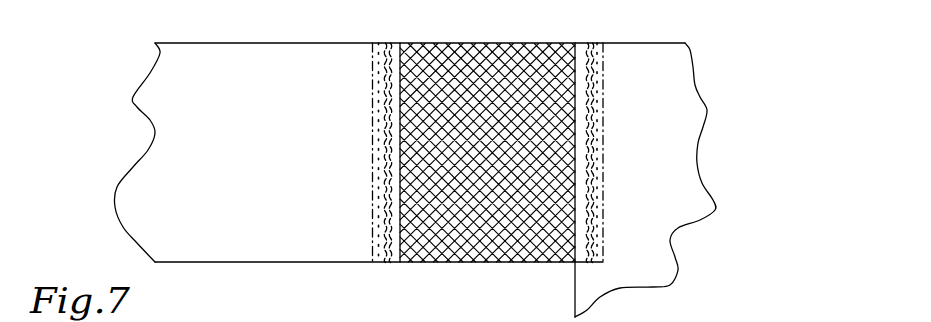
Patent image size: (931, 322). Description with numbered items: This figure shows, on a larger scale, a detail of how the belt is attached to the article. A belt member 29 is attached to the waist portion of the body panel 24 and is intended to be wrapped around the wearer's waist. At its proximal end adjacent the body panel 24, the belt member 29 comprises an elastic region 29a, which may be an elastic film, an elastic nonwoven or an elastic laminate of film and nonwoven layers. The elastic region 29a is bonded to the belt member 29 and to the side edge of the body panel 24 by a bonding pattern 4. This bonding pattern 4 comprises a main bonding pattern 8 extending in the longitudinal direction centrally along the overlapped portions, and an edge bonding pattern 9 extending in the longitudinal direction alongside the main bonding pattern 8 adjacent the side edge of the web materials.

The belt member 29 is at (190, 137).
The elastic region 29a is at (475, 240).
The body panel 24 is at (658, 88).
The edge bonding pattern 9 is at (378, 78).
The main bonding pattern 8 is at (390, 43).
The bonding pattern 4 is at (366, 248).